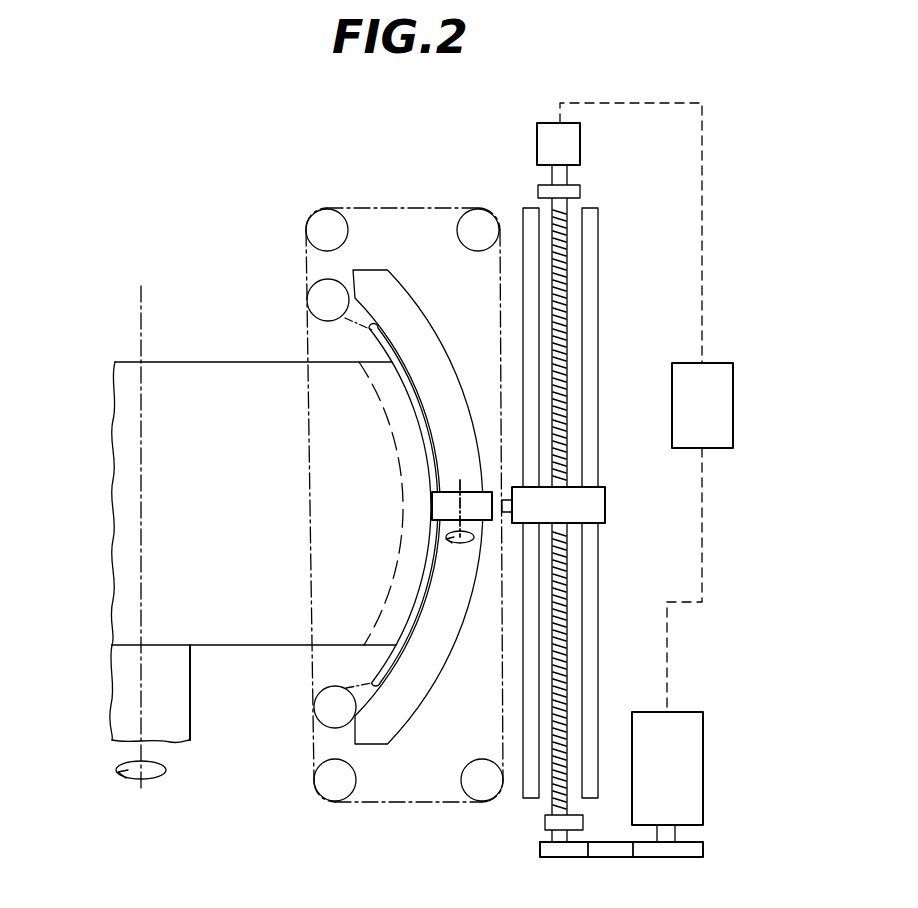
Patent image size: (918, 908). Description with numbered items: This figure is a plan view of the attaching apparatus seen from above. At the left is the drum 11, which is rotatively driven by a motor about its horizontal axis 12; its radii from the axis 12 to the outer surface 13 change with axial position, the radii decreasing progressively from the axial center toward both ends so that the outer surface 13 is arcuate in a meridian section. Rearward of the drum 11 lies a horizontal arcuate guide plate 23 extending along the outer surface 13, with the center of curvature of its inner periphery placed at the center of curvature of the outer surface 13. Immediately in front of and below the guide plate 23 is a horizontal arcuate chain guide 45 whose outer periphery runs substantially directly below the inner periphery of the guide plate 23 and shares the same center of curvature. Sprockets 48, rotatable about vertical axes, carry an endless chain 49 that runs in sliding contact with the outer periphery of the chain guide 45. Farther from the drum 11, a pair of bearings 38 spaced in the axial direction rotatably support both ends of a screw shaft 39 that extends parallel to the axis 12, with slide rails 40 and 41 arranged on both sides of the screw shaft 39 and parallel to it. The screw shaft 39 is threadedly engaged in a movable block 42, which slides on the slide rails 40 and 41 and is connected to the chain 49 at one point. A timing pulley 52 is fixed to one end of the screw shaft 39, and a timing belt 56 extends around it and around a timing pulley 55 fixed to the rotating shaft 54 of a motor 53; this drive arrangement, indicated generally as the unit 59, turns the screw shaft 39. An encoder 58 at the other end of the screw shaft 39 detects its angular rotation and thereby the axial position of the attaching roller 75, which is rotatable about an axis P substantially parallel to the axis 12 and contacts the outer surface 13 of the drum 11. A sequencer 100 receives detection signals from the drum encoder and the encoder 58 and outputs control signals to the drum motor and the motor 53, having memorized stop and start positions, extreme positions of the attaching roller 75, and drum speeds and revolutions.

The drum 11 is at (236, 360).
The axis 12 is at (143, 306).
The outer surface 13 is at (420, 413).
The arcuate guide plate 23 is at (417, 323).
The bearings 38 is at (575, 191).
The screw shaft 39 is at (570, 284).
The slide rail 40 is at (523, 233).
The slide rail 41 is at (592, 236).
The movable block 42 is at (594, 512).
The arcuate chain guide 45 is at (356, 347).
The sprockets 48 is at (340, 228).
The endless chain 49 is at (374, 210).
The timing pulley 52 is at (569, 858).
The motor 53 is at (682, 718).
The rotating shaft 54 is at (676, 831).
The timing pulley 55 is at (680, 858).
The timing belt 56 is at (618, 858).
The encoder 58 is at (542, 142).
The drive unit 59 is at (494, 845).
The attaching roller 75 is at (442, 507).
The sequencer 100 is at (722, 440).
The axis P is at (463, 478).